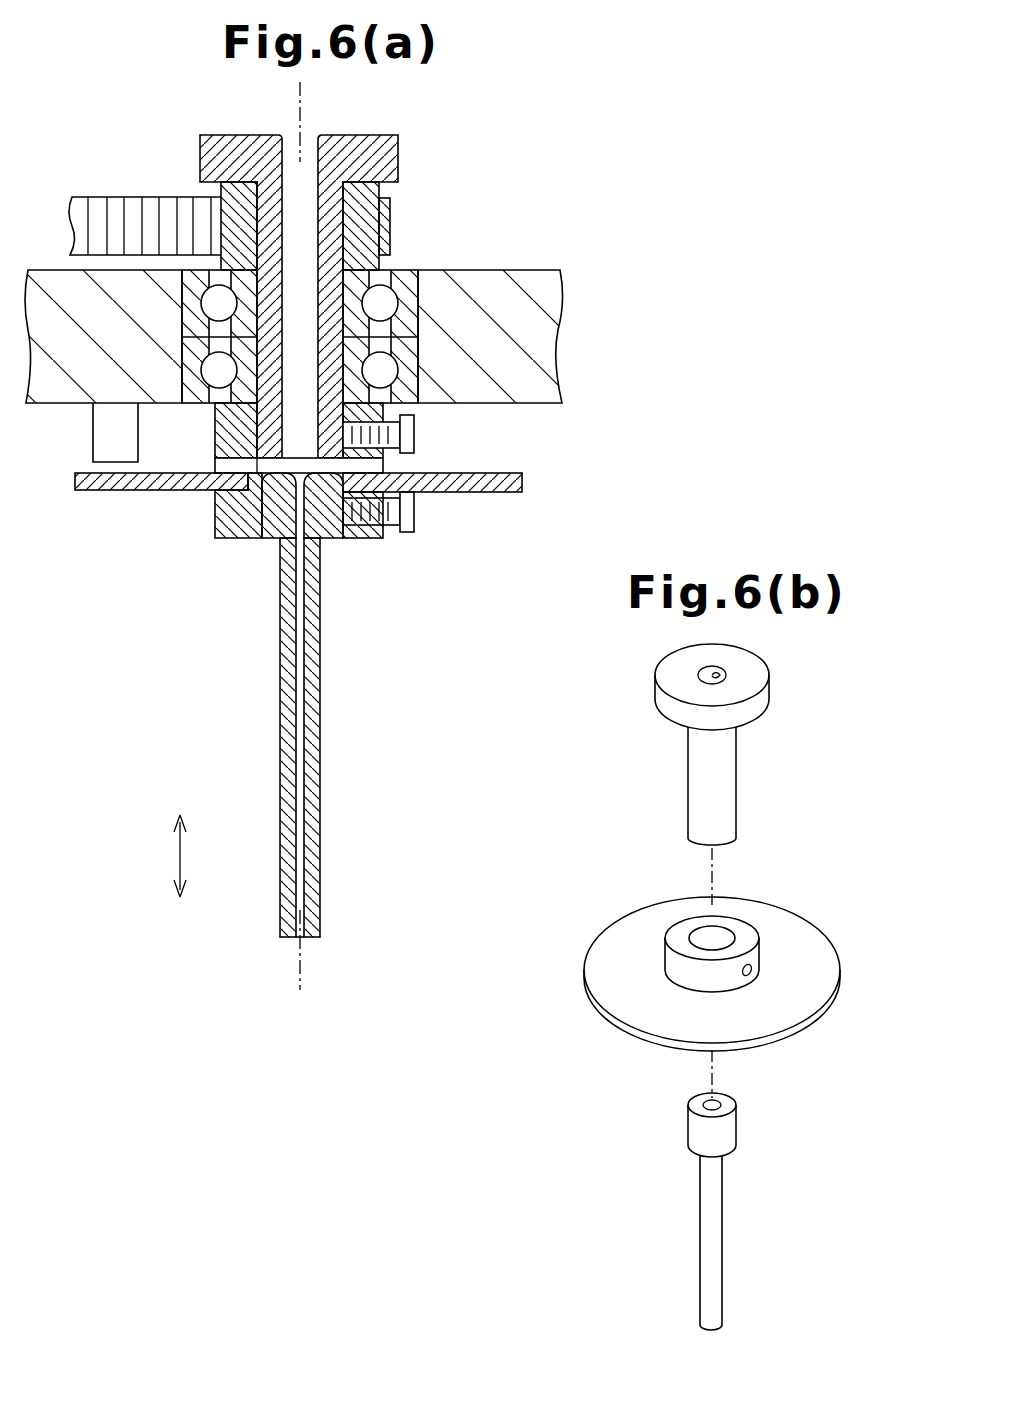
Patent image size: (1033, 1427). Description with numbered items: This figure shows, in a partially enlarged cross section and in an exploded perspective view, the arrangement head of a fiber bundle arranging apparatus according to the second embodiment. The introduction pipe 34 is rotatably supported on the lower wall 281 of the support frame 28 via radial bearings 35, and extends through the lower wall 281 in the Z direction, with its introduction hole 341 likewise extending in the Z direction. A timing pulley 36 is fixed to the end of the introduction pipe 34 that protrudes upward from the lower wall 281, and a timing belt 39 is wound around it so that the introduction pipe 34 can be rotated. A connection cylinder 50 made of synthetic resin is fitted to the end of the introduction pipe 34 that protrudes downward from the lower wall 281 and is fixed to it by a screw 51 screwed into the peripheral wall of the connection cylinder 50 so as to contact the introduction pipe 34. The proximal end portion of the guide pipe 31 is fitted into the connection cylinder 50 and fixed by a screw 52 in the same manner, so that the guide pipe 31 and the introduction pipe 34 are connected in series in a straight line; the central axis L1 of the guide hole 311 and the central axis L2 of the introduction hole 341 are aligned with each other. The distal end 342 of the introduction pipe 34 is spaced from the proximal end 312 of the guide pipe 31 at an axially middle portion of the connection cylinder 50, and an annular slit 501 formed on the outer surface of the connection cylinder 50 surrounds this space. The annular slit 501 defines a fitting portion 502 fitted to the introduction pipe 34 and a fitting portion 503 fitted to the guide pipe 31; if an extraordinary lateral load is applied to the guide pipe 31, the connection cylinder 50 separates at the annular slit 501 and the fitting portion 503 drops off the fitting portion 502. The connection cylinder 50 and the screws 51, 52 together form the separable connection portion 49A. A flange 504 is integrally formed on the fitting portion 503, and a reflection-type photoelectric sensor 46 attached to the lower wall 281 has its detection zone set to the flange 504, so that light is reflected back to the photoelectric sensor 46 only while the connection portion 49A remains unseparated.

In FIG. 6A, the support frame 28 is at (362, 336).
In FIG. 6A, the lower wall 281 is at (558, 298).
In FIG. 6A, the guide pipe 31 is at (278, 705).
In FIG. 6B, the guide pipe 31 is at (751, 1211).
In FIG. 6A, the guide hole 311 is at (300, 628).
In FIG. 6B, the guide hole 311 is at (724, 1106).
In FIG. 6A, the proximal end 312 is at (270, 505).
In FIG. 6A, the introduction pipe 34 is at (390, 154).
In FIG. 6B, the introduction pipe 34 is at (739, 742).
In FIG. 6A, the introduction hole 341 is at (309, 153).
In FIG. 6B, the introduction hole 341 is at (722, 673).
In FIG. 6A, the distal end 342 is at (226, 452).
In FIG. 6A, the radial bearings 35 is at (414, 372).
In FIG. 6A, the timing pulley 36 is at (377, 224).
In FIG. 6A, the timing belt 39 is at (116, 203).
In FIG. 6A, the photoelectric sensor 46 is at (100, 437).
In FIG. 6A, the connection portion 49A is at (493, 500).
In FIG. 6A, the connection cylinder 50 is at (392, 538).
In FIG. 6B, the connection cylinder 50 is at (668, 925).
In FIG. 6A, the annular slit 501 is at (368, 466).
In FIG. 6A, the fitting portion 502 is at (355, 525).
In FIG. 6B, the fitting portion 502 is at (676, 928).
In FIG. 6A, the fitting portion 503 is at (375, 540).
In FIG. 6A, the flange 504 is at (90, 487).
In FIG. 6B, the flange 504 is at (665, 1020).
In FIG. 6A, the screw 51 is at (410, 432).
In FIG. 6A, the screw 52 is at (410, 513).
In FIG. 6A, the central axis L1 is at (303, 962).
In FIG. 6B, the central axis L1 is at (713, 1074).
In FIG. 6A, the central axis L2 is at (300, 100).
In FIG. 6B, the central axis L2 is at (713, 870).
In FIG. 6A, the Z direction Z is at (179, 858).